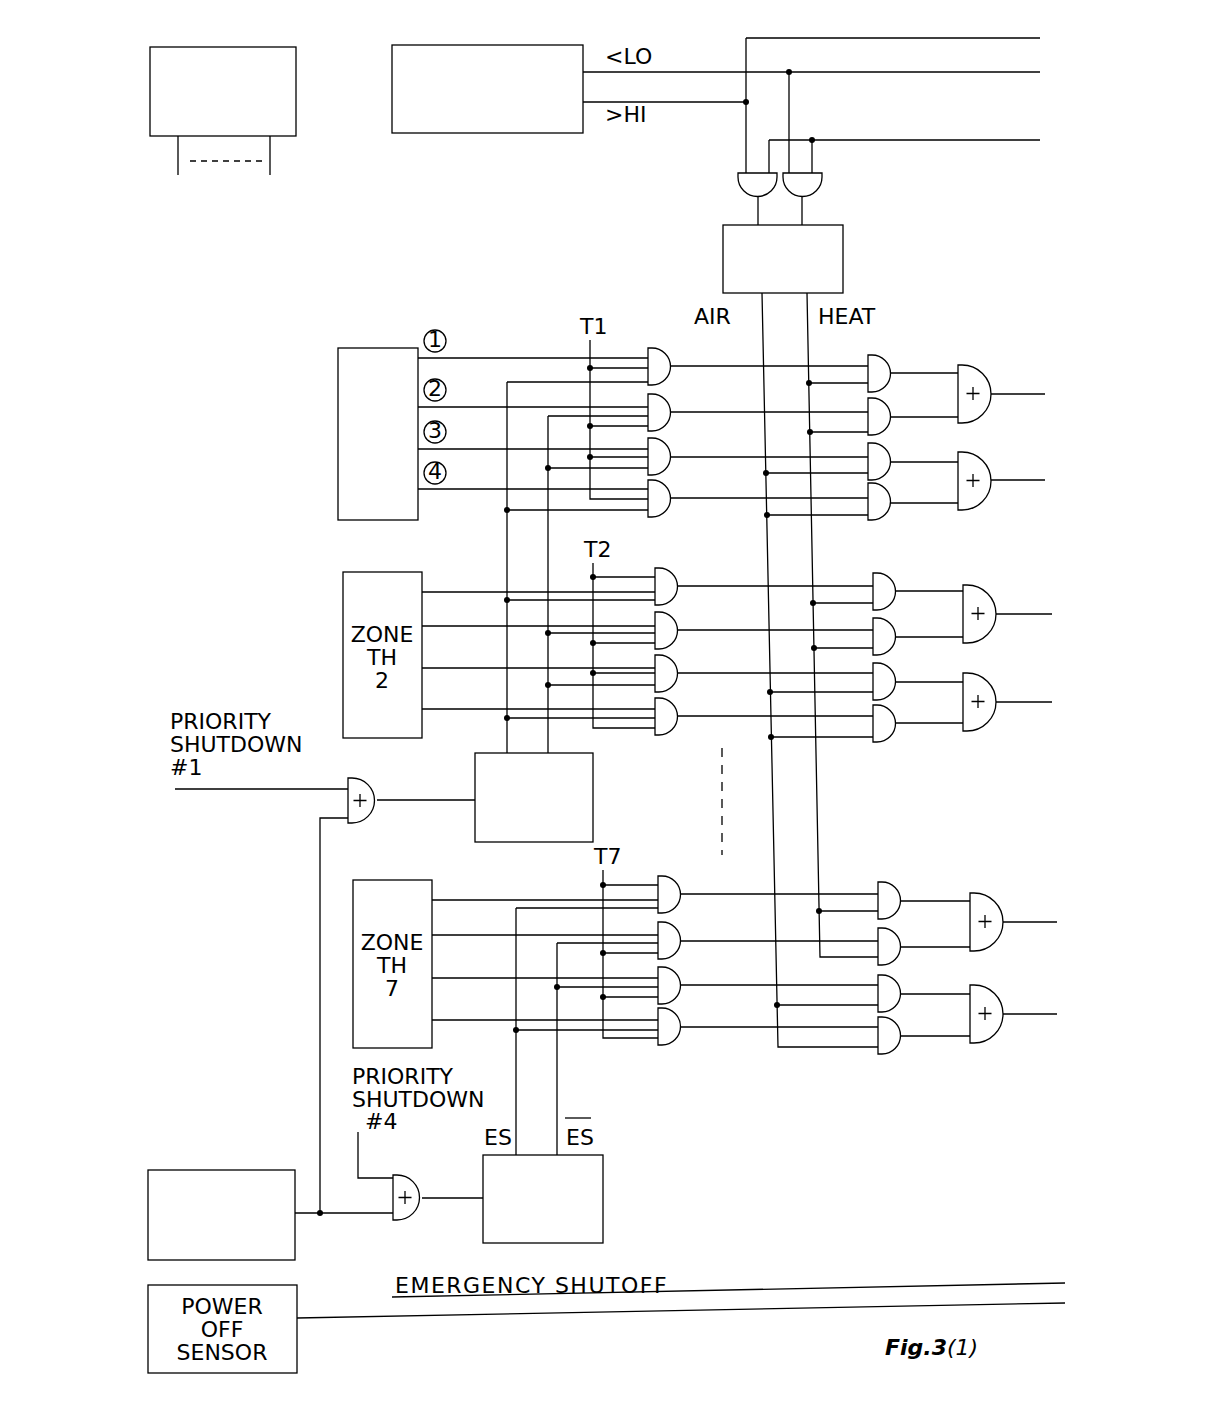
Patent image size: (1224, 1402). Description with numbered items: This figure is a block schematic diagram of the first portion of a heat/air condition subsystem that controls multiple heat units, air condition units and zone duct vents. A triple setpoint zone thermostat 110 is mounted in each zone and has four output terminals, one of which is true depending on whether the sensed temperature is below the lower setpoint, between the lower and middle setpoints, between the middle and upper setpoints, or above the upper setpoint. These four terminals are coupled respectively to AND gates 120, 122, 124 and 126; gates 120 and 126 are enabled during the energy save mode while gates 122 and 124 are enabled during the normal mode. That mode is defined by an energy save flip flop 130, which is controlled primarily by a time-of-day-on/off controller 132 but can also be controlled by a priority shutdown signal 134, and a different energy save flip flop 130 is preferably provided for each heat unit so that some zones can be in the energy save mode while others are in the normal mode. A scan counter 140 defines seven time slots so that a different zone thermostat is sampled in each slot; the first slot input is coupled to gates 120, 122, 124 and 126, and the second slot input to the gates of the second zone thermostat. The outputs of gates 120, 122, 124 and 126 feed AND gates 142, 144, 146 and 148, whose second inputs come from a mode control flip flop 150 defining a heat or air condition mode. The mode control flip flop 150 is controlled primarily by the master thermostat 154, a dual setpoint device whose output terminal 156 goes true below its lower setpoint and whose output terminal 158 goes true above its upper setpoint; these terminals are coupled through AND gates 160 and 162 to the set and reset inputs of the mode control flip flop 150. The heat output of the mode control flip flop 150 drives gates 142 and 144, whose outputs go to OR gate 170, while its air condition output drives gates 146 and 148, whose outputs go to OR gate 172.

The zone thermostat 110 is at (360, 348).
The AND gate 120 is at (670, 352).
The AND gate 122 is at (670, 398).
The AND gate 124 is at (670, 442).
The AND gate 126 is at (670, 484).
The energy save flip flop 130 is at (594, 780).
The time-of-day-on/off controller 132 is at (210, 1168).
The priority shutdown signal 134 is at (362, 1162).
The scan counter 140 is at (266, 47).
The AND gate 142 is at (890, 358).
The AND gate 144 is at (890, 402).
The AND gate 146 is at (900, 439).
The AND gate 148 is at (900, 479).
The mode control flip flop 150 is at (845, 254).
The master thermostat 154 is at (528, 45).
The output terminal 156 is at (724, 52).
The output terminal 158 is at (735, 102).
The AND gate 160 is at (822, 185).
The AND gate 162 is at (737, 186).
The OR gate 170 is at (980, 370).
The OR gate 172 is at (985, 465).